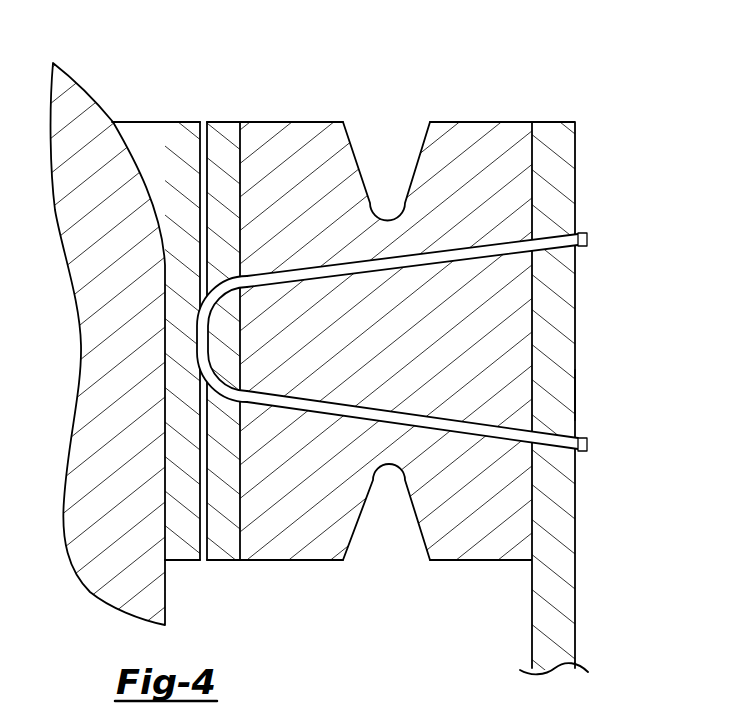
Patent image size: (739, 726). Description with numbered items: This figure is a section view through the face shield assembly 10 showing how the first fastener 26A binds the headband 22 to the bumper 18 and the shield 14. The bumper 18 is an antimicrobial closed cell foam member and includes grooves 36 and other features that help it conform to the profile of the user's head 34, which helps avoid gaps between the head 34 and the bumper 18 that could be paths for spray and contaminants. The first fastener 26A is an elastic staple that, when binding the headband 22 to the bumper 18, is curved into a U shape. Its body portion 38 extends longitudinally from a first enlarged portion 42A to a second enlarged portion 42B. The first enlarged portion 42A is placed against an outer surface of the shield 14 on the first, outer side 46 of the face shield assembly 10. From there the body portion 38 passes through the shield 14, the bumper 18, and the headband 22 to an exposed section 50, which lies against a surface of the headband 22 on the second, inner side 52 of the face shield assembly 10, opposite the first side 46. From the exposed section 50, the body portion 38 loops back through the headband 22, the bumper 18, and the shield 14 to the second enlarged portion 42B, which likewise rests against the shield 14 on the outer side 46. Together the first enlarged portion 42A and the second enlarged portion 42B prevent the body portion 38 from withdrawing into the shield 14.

The face shield assembly 10 is at (507, 67).
The shield 14 is at (575, 154).
The bumper 18 is at (494, 122).
The headband 22 is at (227, 122).
The first fastener 26A is at (332, 376).
The head 34 is at (90, 267).
The grooves 36 is at (408, 118).
The body portion 38 is at (440, 418).
The first enlarged portion 42A is at (588, 238).
The second enlarged portion 42B is at (588, 443).
The first, outer side 46 is at (575, 390).
The exposed section 50 is at (196, 343).
The second, inner side 52 is at (206, 210).